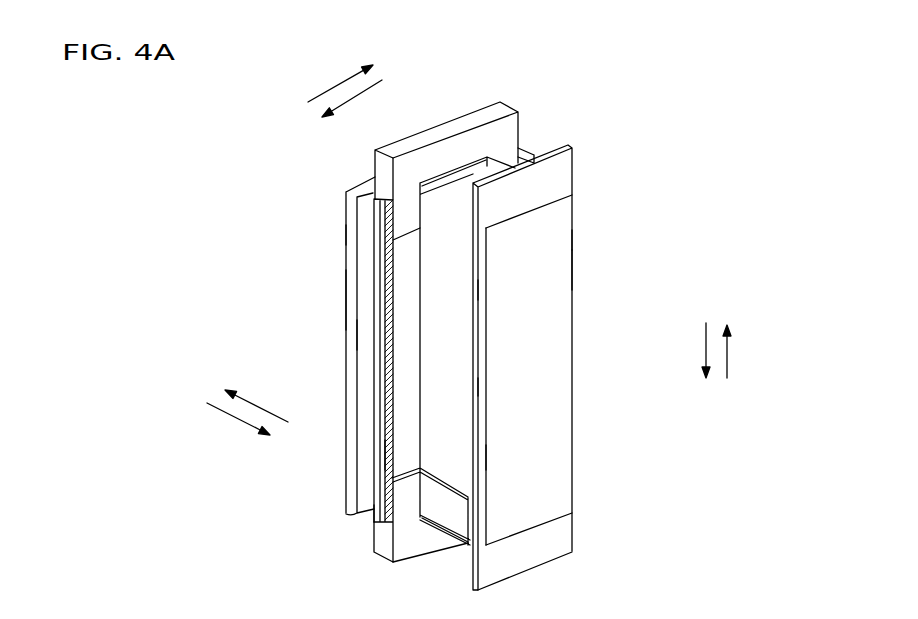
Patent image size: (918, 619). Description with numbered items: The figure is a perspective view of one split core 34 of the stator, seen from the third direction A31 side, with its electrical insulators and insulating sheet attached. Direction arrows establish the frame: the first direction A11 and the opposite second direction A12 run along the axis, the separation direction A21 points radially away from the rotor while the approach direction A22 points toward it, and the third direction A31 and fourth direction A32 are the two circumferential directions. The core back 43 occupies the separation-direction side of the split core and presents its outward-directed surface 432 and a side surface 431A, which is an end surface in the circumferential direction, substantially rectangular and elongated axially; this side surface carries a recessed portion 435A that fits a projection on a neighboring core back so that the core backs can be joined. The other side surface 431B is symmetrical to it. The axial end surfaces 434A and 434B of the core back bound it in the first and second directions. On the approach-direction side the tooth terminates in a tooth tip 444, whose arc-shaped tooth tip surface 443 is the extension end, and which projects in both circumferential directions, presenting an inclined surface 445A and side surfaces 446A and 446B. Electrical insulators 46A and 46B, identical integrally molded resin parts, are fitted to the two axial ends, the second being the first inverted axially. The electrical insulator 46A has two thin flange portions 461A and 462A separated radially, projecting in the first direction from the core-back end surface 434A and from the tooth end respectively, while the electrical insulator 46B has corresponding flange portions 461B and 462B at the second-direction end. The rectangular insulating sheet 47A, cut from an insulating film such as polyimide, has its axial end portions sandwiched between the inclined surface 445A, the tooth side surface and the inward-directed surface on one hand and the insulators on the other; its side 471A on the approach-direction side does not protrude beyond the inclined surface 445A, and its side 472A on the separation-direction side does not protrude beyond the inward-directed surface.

The split core 34 is at (630, 240).
The core back 43 is at (362, 237).
The side surface 431A is at (350, 337).
The side surface 431B is at (527, 147).
The outward-directed surface 432 is at (346, 291).
The end surface 434A is at (374, 199).
The end surface 434B is at (346, 516).
The recessed portion 435A is at (346, 231).
The tooth tip surface 443 is at (547, 372).
The tooth tip 444 is at (573, 195).
The inclined surface 445A is at (480, 291).
The side surface 446A is at (487, 457).
The side surface 446B is at (573, 268).
The electrical insulator 46A is at (474, 172).
The electrical insulator 46B is at (456, 548).
The flange portion 461A is at (518, 117).
The flange portion 461B is at (370, 540).
The flange portion 462A is at (573, 165).
The flange portion 462B is at (547, 563).
The insulating sheet 47A is at (467, 348).
The side 471A is at (476, 387).
The side 472A is at (387, 450).
The first direction A11 is at (727, 353).
The second direction A12 is at (702, 352).
The separation direction A21 is at (255, 407).
The approach direction A22 is at (230, 420).
The third direction A31 is at (328, 85).
The fourth direction A32 is at (350, 103).